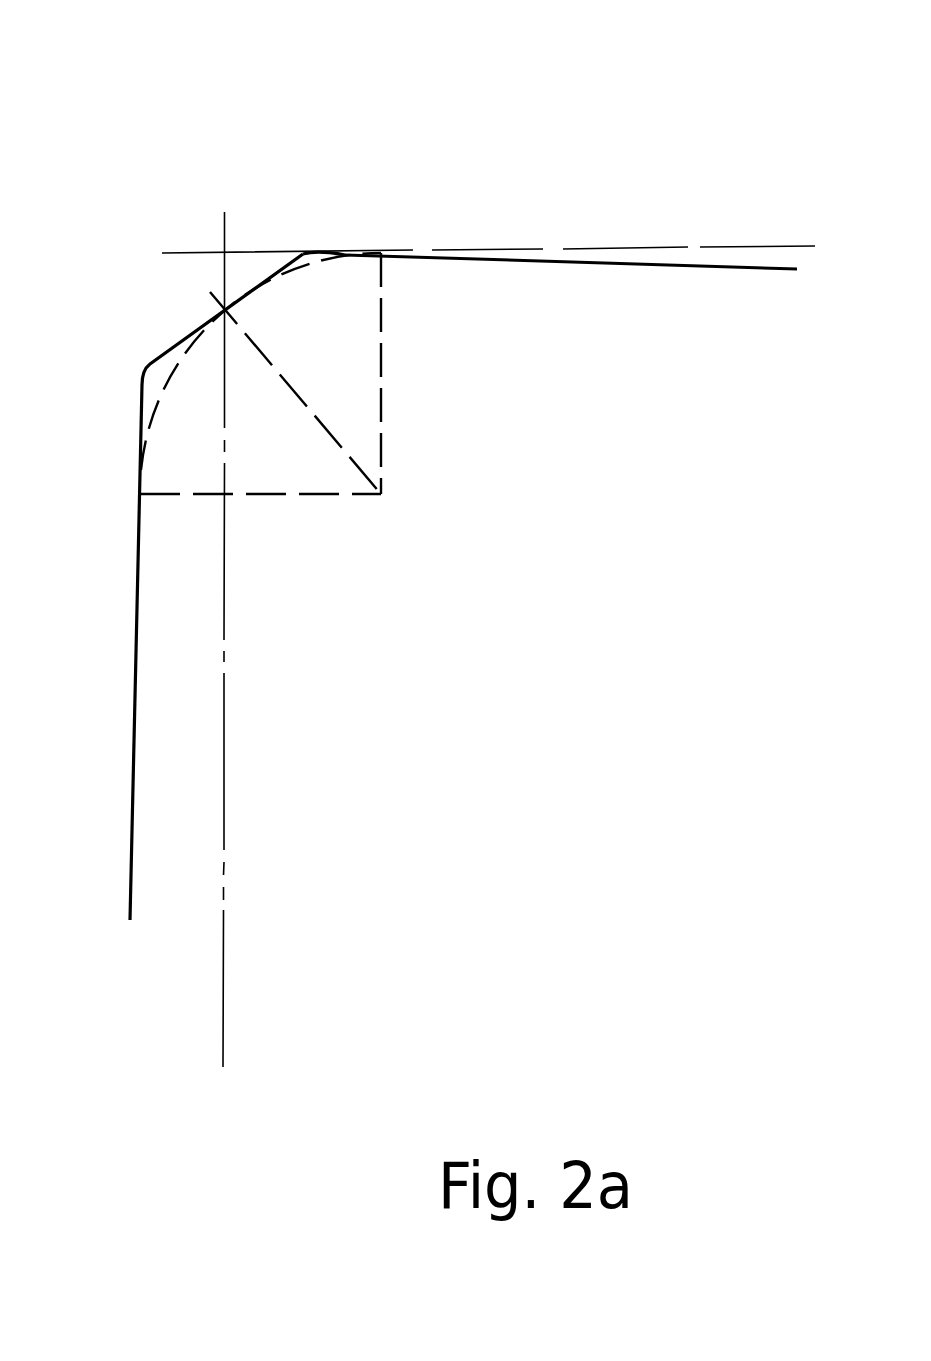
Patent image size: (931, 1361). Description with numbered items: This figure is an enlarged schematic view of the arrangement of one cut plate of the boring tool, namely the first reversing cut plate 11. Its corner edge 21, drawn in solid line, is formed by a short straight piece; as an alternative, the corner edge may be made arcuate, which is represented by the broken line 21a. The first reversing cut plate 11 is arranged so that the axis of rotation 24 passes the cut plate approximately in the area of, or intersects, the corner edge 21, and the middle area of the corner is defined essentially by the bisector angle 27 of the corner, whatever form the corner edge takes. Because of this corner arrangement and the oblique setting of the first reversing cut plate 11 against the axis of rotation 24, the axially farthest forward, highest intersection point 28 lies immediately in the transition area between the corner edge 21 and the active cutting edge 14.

The first reversing cut plate 11 is at (582, 622).
The active cutting edge 14 is at (620, 260).
The corner edge 21 is at (188, 333).
The arcuate corner edge 21a is at (160, 403).
The axis of rotation 24 is at (223, 953).
The bisector angle 27 is at (332, 442).
The highest intersection point 28 is at (336, 216).